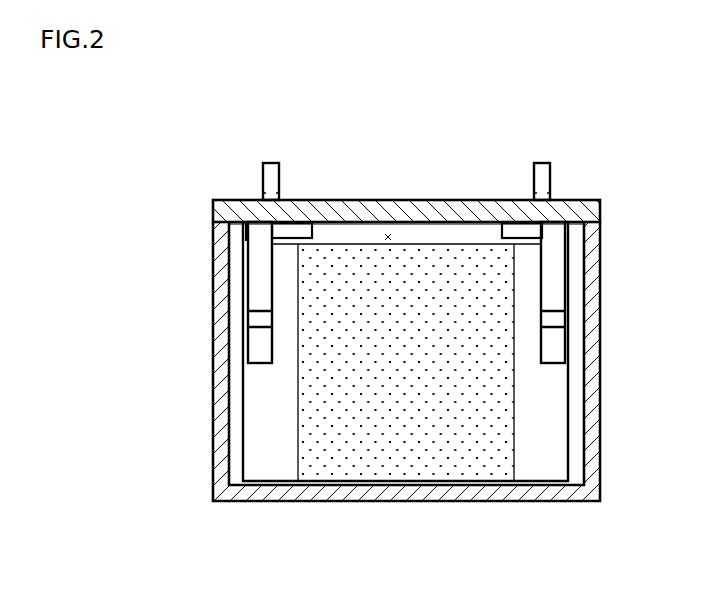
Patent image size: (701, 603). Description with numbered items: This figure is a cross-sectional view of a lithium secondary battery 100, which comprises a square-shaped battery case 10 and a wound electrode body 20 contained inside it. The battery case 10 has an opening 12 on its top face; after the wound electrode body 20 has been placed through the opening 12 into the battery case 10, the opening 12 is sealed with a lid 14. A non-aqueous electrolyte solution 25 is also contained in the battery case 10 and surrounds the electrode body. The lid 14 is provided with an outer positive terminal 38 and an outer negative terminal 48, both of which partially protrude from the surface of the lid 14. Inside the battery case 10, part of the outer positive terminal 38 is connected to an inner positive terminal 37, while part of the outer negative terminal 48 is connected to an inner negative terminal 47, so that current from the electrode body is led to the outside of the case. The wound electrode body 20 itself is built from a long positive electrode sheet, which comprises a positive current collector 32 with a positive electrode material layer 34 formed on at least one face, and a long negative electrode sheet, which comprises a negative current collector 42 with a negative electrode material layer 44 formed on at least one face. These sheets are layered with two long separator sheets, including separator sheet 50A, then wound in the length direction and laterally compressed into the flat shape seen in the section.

The lithium secondary battery 100 is at (419, 320).
The battery case 10 is at (593, 240).
The opening 12 is at (389, 234).
The lid 14 is at (596, 206).
The wound electrode body 20 is at (428, 246).
The non-aqueous electrolyte solution 25 is at (470, 392).
The positive current collector 32 is at (271, 468).
The positive electrode material layer 34 is at (356, 448).
The inner positive terminal 37 is at (260, 283).
The outer positive terminal 38 is at (270, 164).
The negative current collector 42 is at (537, 472).
The negative electrode material layer 44 is at (488, 447).
The inner negative terminal 47 is at (548, 290).
The outer negative terminal 48 is at (542, 166).
The separator sheet 50A is at (418, 463).